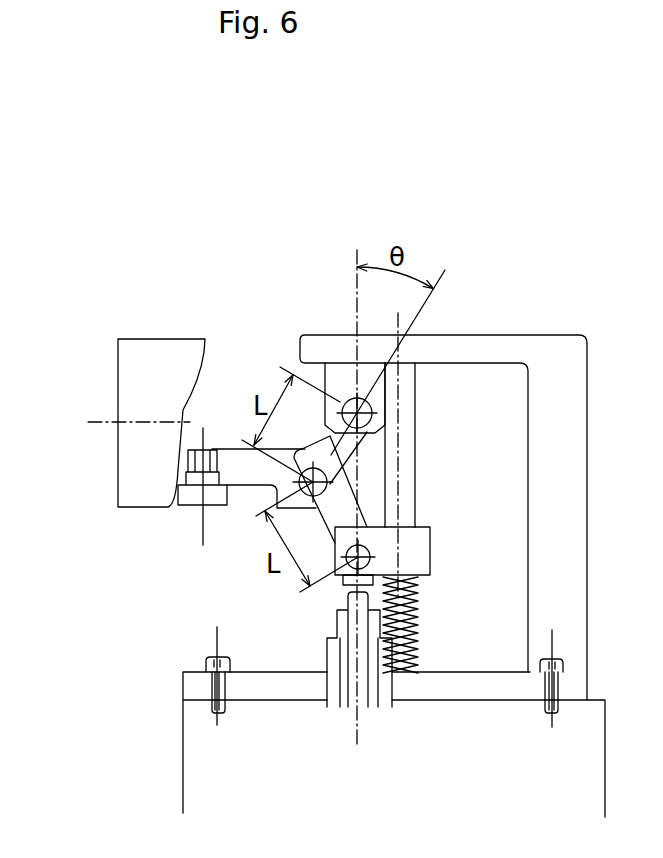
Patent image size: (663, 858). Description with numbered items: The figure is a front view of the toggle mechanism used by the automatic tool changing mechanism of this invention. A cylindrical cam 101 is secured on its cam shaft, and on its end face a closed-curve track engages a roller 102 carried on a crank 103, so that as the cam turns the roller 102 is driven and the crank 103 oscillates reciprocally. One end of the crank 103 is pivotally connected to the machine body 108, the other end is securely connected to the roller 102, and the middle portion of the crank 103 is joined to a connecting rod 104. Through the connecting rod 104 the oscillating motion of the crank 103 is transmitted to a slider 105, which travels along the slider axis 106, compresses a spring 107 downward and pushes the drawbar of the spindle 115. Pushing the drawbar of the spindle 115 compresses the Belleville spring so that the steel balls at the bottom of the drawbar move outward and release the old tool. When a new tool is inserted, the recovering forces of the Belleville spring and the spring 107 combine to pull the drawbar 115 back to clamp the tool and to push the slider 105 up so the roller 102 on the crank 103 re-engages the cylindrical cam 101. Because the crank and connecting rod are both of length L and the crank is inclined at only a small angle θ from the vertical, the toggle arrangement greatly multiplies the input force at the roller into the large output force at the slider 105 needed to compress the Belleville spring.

The cylindrical cam 101 is at (165, 370).
The roller 102 is at (193, 495).
The crank 103 is at (252, 477).
The connecting rod 104 is at (347, 512).
The slider 105 is at (387, 562).
The slider axis 106 is at (405, 407).
The spring 107 is at (420, 637).
The machine body 108 is at (492, 348).
The drawbar of spindle 115 is at (368, 666).